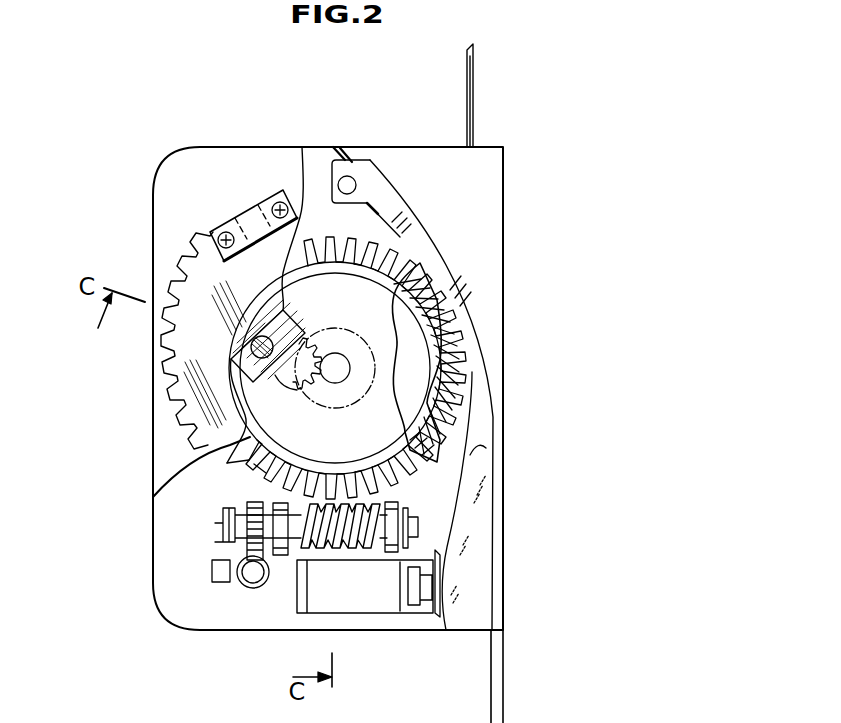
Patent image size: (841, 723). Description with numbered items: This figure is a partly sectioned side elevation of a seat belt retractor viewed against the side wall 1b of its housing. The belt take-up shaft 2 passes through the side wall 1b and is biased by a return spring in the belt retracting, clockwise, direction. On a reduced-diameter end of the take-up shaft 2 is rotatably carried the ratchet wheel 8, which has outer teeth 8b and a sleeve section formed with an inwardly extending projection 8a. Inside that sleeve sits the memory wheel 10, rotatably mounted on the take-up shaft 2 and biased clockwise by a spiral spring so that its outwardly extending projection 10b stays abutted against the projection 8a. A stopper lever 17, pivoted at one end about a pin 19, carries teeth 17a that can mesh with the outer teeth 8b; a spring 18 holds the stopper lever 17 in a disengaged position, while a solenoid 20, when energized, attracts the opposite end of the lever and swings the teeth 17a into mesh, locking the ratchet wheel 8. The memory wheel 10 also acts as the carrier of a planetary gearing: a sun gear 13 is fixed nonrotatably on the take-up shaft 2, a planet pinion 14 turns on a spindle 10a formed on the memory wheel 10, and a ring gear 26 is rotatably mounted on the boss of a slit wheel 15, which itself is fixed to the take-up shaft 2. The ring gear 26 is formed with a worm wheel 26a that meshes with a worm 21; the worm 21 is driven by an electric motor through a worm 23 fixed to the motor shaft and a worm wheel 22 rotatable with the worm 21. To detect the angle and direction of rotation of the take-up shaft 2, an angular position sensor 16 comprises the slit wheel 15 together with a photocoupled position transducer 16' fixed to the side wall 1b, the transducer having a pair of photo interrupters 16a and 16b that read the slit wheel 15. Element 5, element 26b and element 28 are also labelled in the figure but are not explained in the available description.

The side wall 1b is at (153, 212).
The belt take-up shaft 2 is at (340, 375).
The pin 5 is at (474, 101).
The ratchet wheel 8 is at (455, 428).
The inwardly extending projection 8a is at (483, 462).
The outer teeth 8b is at (462, 322).
The memory wheel 10 is at (400, 320).
The spindle 10a is at (297, 330).
The outwardly extending projection 10b is at (443, 388).
The sun gear 13 is at (318, 383).
The planet pinion 14 is at (300, 330).
The slit wheel 15 is at (182, 397).
The angular position sensor 16 is at (251, 182).
The photo interrupter 16a is at (236, 228).
The photo interrupter 16b is at (257, 213).
The photocoupled position transducer 16' is at (228, 322).
The stopper lever 17 is at (487, 450).
The teeth 17a is at (464, 361).
The spring 18 is at (346, 150).
The pin 19 is at (357, 184).
The solenoid 20 is at (390, 607).
The worm 21 is at (313, 537).
The worm wheel 22 is at (250, 547).
The worm 23 is at (246, 588).
The ring gear 26 is at (243, 467).
The worm wheel 26a is at (258, 481).
The ratchet tooth 26b is at (250, 473).
The block 28 is at (212, 578).